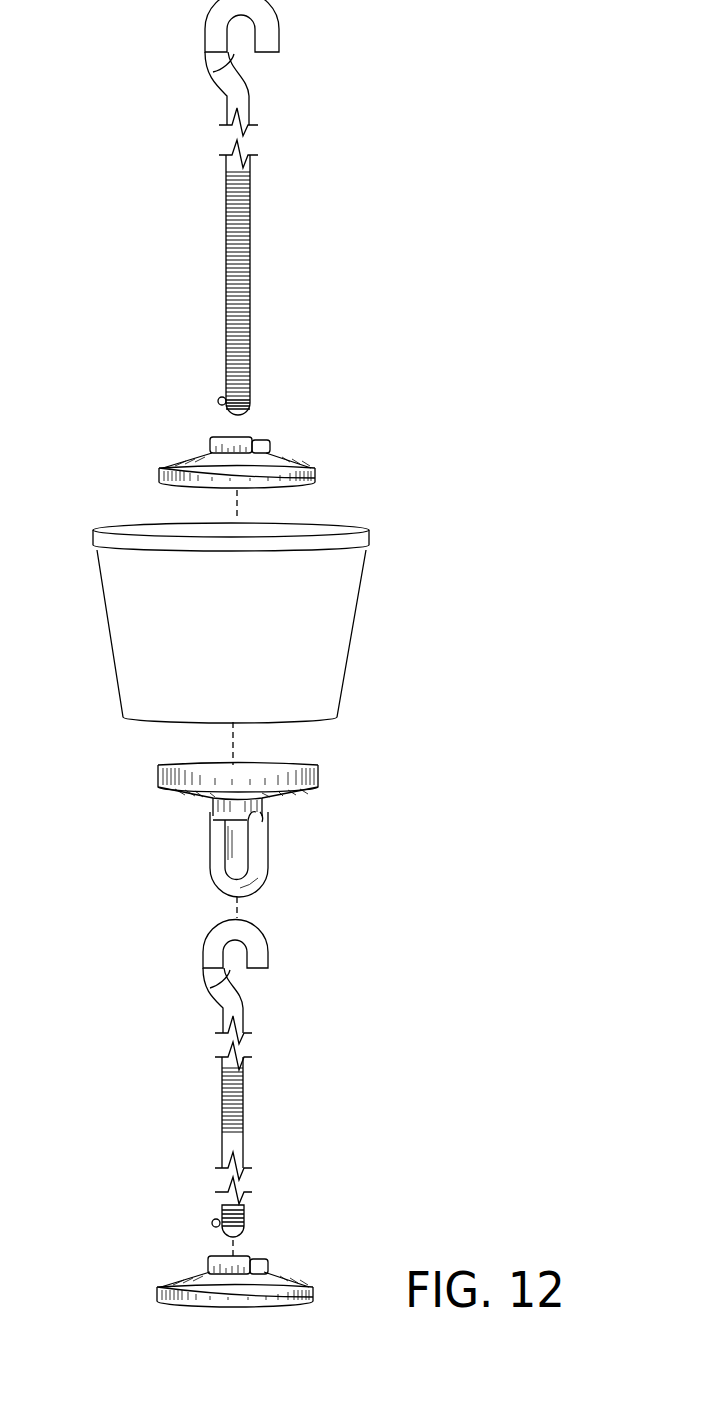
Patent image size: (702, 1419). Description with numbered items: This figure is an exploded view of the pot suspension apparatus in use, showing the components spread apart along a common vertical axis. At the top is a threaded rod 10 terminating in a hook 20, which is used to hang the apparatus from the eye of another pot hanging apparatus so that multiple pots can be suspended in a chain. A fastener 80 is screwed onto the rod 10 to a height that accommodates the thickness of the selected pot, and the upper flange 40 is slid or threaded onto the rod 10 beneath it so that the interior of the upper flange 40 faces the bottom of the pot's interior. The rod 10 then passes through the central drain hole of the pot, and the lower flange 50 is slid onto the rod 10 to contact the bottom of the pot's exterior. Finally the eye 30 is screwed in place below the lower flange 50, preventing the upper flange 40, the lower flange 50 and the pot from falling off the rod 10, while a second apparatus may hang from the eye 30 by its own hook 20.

The rod 10 is at (222, 1082).
The hook 20 is at (263, 26).
The eye 30 is at (267, 858).
The upper flange 40 is at (292, 1280).
The lower flange 50 is at (158, 781).
The upper flange fastener 80 is at (210, 1258).